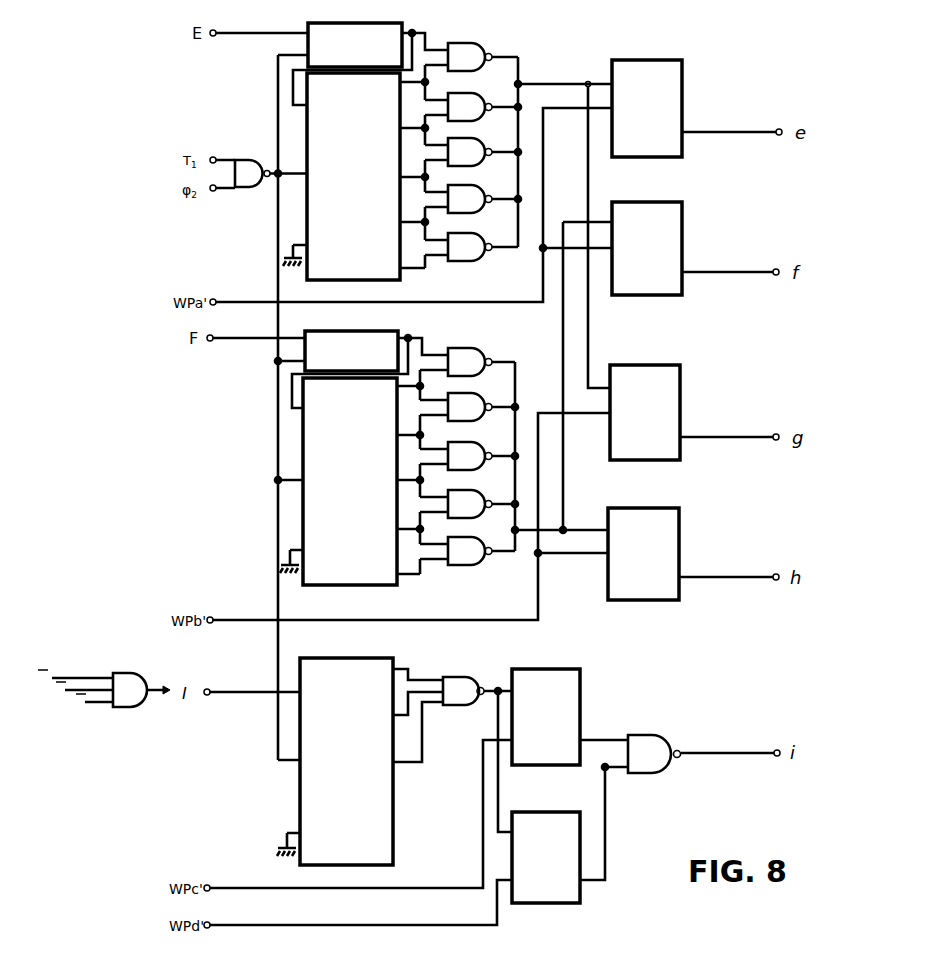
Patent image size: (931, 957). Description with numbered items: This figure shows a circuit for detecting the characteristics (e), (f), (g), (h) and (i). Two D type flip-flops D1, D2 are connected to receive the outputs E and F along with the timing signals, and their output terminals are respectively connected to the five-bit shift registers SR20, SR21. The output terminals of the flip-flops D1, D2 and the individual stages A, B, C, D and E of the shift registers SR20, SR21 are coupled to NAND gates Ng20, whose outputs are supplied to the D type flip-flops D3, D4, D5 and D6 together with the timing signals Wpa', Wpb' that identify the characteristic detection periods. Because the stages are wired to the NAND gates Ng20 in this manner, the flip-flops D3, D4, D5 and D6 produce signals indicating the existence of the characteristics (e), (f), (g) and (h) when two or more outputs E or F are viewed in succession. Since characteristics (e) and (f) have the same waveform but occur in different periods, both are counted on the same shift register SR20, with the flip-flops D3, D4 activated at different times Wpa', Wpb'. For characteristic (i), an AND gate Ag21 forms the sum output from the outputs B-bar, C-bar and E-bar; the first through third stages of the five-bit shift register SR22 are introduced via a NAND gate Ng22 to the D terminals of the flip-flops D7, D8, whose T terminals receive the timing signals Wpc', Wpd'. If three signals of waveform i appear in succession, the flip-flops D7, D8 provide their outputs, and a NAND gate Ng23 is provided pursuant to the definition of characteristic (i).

The D type flip-flop D1 is at (355, 45).
The D type flip-flop D2 is at (351, 351).
The D type flip-flop D3 is at (682, 80).
The D type flip-flop D4 is at (682, 238).
The D type flip-flop D5 is at (680, 392).
The D type flip-flop D6 is at (679, 548).
The D type flip-flop D7 is at (580, 676).
The D type flip-flop D8 is at (580, 898).
The five-bit shift register SR20 is at (353, 176).
The five-bit shift register SR21 is at (350, 481).
The five-bit shift register SR22 is at (346, 761).
The NAND gates Ng20 is at (478, 44).
The NAND gate Ng22 is at (474, 676).
The NAND gate Ng23 is at (661, 770).
The AND gate Ag21 is at (104, 680).